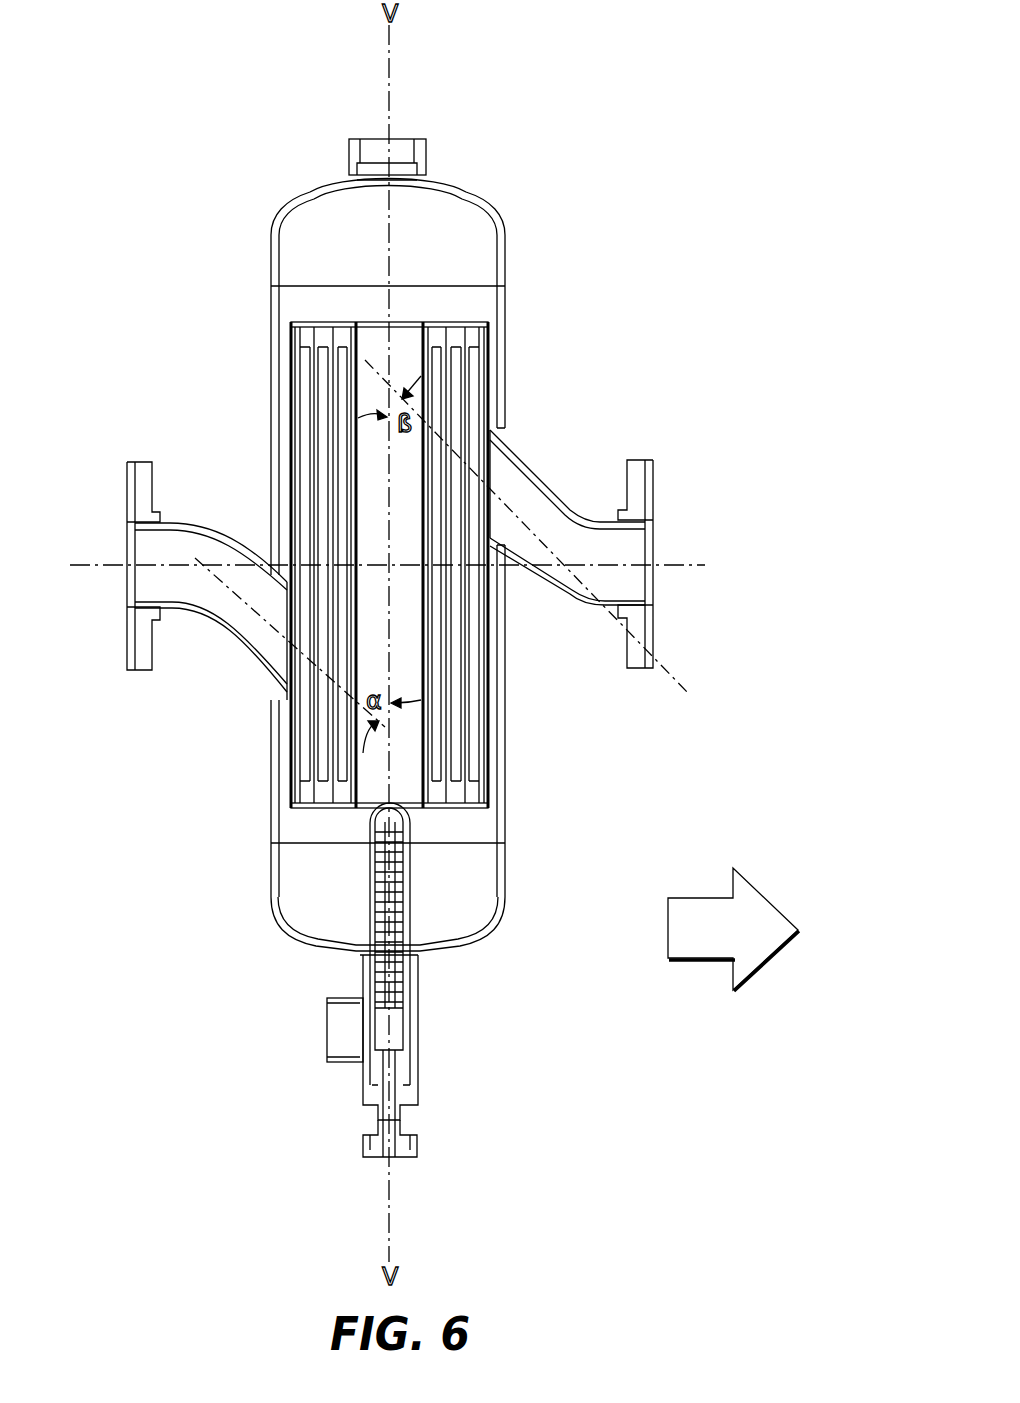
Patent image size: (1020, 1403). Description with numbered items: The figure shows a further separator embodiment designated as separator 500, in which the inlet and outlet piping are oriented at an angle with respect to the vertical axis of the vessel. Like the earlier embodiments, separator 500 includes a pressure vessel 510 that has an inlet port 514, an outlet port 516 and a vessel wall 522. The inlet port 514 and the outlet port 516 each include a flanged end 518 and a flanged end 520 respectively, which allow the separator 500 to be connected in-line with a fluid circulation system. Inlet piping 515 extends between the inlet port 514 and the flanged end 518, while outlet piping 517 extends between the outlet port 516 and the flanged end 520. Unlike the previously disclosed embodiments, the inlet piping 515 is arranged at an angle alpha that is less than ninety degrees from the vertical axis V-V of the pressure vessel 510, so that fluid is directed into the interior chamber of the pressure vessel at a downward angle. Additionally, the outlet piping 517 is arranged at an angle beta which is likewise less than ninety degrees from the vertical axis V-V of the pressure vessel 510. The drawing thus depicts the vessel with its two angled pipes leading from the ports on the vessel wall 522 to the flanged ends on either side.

The separator 500 is at (578, 88).
The pressure vessel 510 is at (505, 248).
The inlet port 514 is at (277, 603).
The inlet piping 515 is at (198, 618).
The outlet port 516 is at (492, 460).
The outlet piping 517 is at (550, 480).
The flanged end 518 is at (135, 462).
The flanged end 520 is at (653, 477).
The vessel wall 522 is at (480, 935).